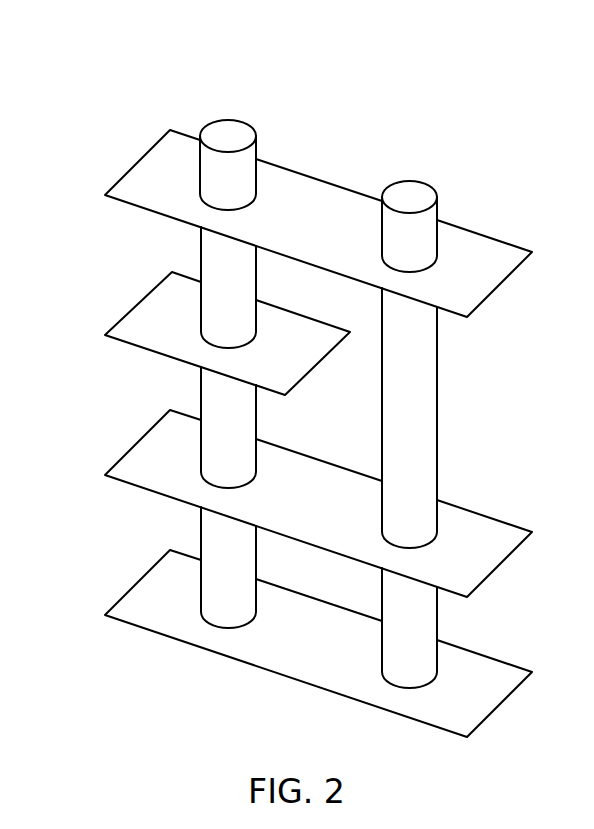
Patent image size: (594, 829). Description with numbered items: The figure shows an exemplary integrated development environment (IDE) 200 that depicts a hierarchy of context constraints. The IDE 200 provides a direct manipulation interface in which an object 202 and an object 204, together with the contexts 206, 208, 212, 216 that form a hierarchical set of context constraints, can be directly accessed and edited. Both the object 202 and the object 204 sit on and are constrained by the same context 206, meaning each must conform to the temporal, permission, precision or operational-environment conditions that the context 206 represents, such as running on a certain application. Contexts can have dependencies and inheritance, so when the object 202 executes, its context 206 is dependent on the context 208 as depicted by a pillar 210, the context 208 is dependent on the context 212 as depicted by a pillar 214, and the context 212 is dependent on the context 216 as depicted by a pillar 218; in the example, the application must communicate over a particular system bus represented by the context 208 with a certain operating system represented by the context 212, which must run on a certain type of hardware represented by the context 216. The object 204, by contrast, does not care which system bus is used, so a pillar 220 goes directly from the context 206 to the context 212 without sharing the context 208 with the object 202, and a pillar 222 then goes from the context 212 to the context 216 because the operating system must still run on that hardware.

The integrated development environment 200 is at (78, 124).
The object 202 is at (230, 127).
The object 204 is at (412, 190).
The context 206 is at (337, 235).
The context 208 is at (310, 360).
The pillar 210 is at (243, 301).
The context 212 is at (332, 510).
The pillar 214 is at (243, 443).
The context 216 is at (333, 651).
The pillar 218 is at (243, 578).
The pillar 220 is at (430, 435).
The pillar 222 is at (430, 648).